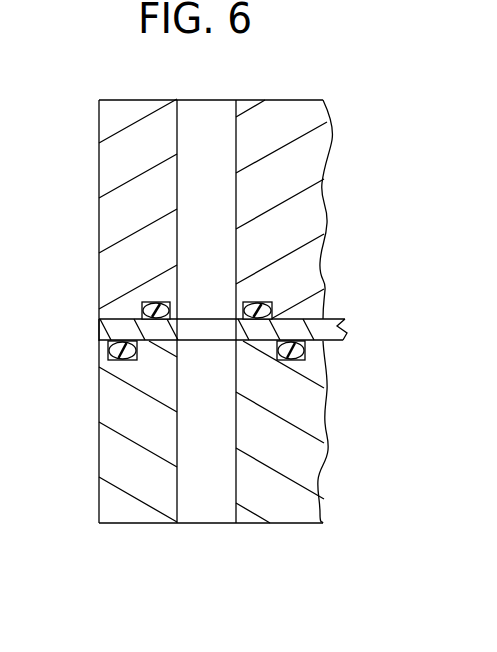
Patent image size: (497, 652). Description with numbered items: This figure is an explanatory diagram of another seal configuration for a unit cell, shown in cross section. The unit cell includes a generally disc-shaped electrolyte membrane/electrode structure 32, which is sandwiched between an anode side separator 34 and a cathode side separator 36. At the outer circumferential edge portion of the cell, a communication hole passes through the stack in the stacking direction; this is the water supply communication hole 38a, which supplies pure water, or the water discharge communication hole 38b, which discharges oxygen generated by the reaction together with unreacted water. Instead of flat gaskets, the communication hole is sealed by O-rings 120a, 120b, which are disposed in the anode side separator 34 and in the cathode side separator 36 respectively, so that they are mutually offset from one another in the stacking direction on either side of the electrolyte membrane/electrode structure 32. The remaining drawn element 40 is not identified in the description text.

The cathode side separator 36 is at (98, 99).
The anode side separator 34 is at (98, 524).
The electrolyte membrane/electrode structure 32 is at (99, 331).
The plate 40 is at (334, 329).
The water supply communication hole 38a is at (228, 341).
The water discharge communication hole 38b is at (236, 511).
The O-ring 120a is at (305, 350).
The O-ring 120b is at (272, 302).